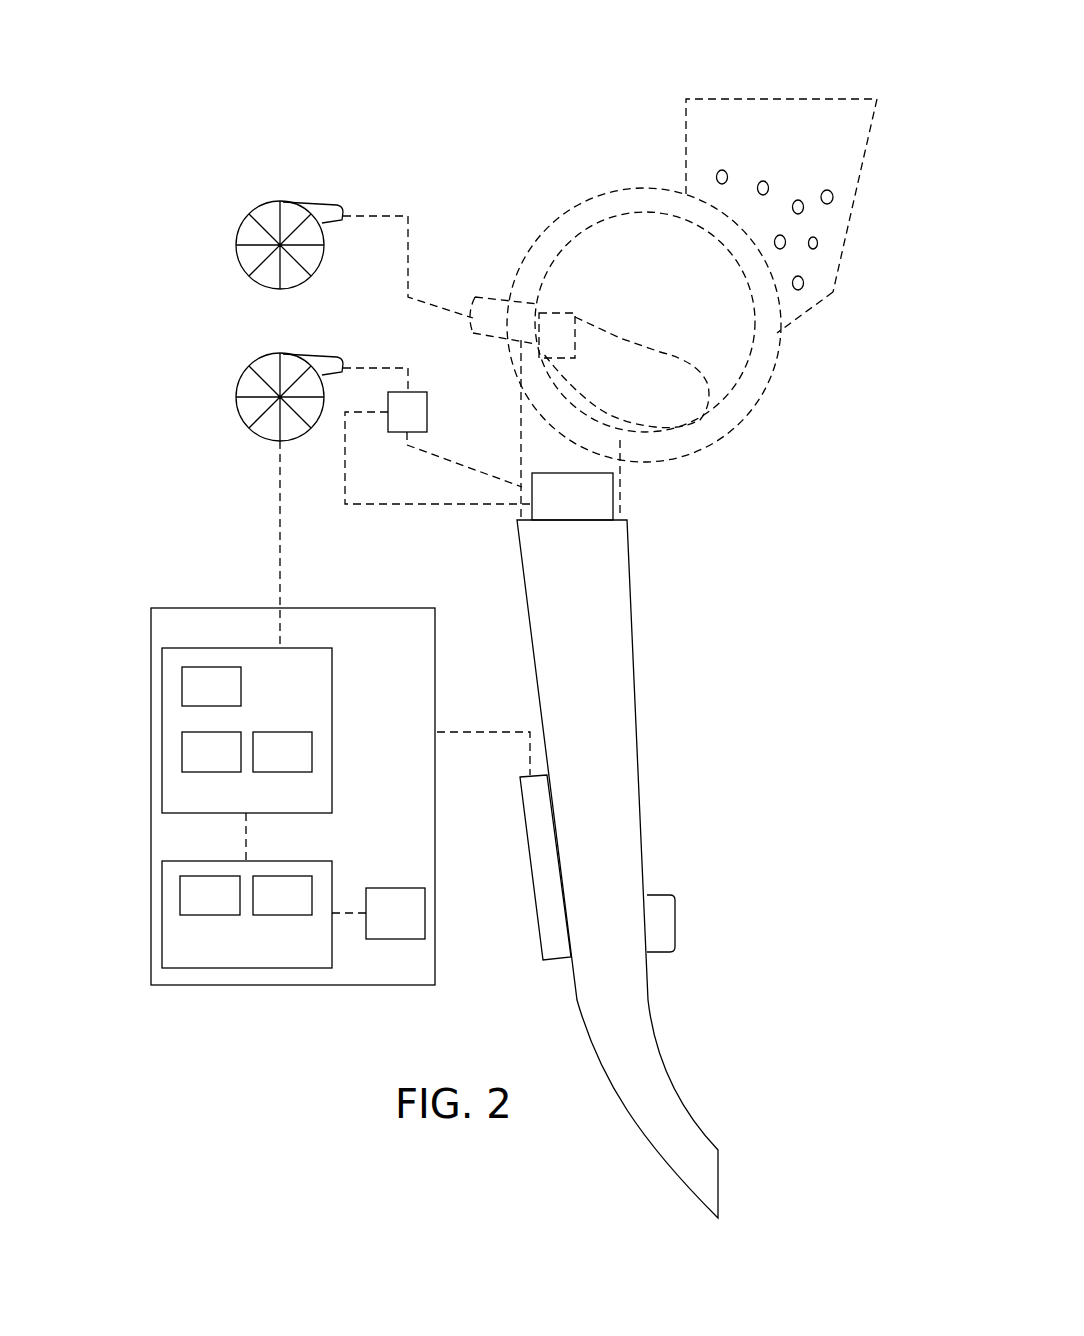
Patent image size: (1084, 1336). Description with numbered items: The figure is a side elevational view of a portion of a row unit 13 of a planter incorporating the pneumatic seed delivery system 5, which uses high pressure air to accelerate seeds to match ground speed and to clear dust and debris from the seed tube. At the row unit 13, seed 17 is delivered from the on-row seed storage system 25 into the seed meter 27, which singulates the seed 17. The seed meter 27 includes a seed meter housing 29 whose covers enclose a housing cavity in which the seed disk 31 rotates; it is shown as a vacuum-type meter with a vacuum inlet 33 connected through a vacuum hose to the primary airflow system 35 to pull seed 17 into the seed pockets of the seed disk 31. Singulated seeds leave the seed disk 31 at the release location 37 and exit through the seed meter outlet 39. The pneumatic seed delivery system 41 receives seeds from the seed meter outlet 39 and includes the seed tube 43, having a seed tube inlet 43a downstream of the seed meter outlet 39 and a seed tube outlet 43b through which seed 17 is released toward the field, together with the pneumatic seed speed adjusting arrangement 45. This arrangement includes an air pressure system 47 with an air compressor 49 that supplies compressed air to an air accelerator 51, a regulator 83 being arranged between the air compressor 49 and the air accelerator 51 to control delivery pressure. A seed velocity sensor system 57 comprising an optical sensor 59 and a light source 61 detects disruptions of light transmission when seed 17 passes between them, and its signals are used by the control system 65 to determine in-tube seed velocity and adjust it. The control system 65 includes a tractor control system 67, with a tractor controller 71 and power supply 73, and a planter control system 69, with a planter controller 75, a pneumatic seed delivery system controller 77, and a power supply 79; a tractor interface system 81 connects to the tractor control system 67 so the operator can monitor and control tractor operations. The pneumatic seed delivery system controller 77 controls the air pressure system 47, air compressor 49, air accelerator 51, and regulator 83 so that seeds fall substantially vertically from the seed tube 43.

The pneumatic seed delivery system 5 is at (355, 90).
The row unit 13 is at (540, 150).
The seed 17 is at (835, 205).
The on-row seed storage system 25 is at (783, 50).
The seed meter 27 is at (830, 325).
The seed meter housing 29 is at (742, 427).
The seed disk 31 is at (748, 365).
The vacuum inlet 33 is at (683, 418).
The primary airflow system 35 is at (260, 198).
The release location 37 is at (558, 313).
The seed meter outlet 39 is at (520, 447).
The pneumatic seed delivery system 41 is at (707, 653).
The seed tube 43 is at (620, 797).
The seed tube inlet 43a is at (542, 550).
The seed tube outlet 43b is at (697, 1168).
The pneumatic seed speed adjusting arrangement 45 is at (638, 497).
The air pressure system 47 is at (274, 482).
The air compressor 49 is at (237, 378).
The air accelerator 51 is at (577, 500).
The seed velocity sensor system 57 is at (683, 882).
The optical sensor 59 is at (530, 920).
The light source 61 is at (665, 932).
The control system 65 is at (133, 688).
The tractor control system 67 is at (335, 880).
The planter control system 69 is at (335, 750).
The tractor controller 71 is at (223, 907).
The power supply 73 is at (267, 907).
The planter controller 75 is at (225, 763).
The pneumatic seed delivery system controller 77 is at (227, 690).
The power supply 79 is at (268, 763).
The tractor interface system 81 is at (408, 927).
The regulator 83 is at (418, 390).